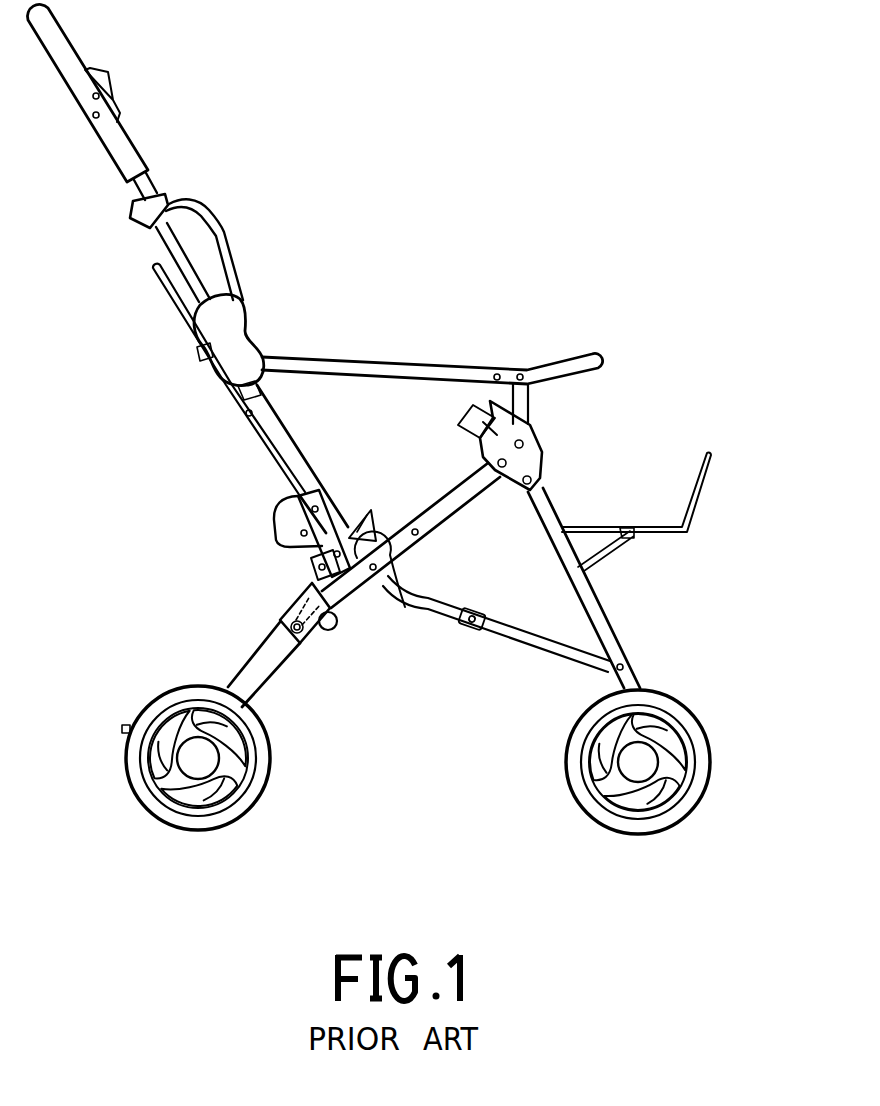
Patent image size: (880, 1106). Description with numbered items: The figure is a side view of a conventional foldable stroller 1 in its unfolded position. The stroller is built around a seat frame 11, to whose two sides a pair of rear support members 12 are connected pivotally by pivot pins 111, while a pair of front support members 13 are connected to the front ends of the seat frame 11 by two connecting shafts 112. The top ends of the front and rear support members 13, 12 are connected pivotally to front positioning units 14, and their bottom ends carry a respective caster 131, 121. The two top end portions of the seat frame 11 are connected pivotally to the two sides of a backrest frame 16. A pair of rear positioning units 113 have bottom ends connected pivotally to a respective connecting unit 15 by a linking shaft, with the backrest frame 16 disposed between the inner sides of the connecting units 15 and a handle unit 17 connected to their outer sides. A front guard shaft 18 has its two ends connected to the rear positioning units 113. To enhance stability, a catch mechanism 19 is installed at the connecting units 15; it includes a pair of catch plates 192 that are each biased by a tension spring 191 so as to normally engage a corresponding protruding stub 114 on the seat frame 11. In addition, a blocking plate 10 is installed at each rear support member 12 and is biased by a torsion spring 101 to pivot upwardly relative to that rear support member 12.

The foldable stroller 1 is at (446, 320).
The blocking plate 10 is at (311, 628).
The torsion spring 101 is at (318, 636).
The seat frame 11 is at (306, 466).
The pivot pins 111 is at (373, 571).
The connecting shafts 112 is at (541, 642).
The rear positioning units 113 is at (203, 352).
The protruding stub 114 is at (405, 607).
The rear support members 12 is at (430, 530).
The caster 121 is at (262, 771).
The front support members 13 is at (600, 622).
The caster 131 is at (708, 745).
The front positioning units 14 is at (530, 452).
The connecting unit 15 is at (310, 565).
The backrest frame 16 is at (262, 453).
The handle unit 17 is at (148, 183).
The front guard shaft 18 is at (566, 362).
The catch mechanism 19 is at (340, 495).
The tension spring 191 is at (310, 547).
The catch plates 192 is at (371, 510).